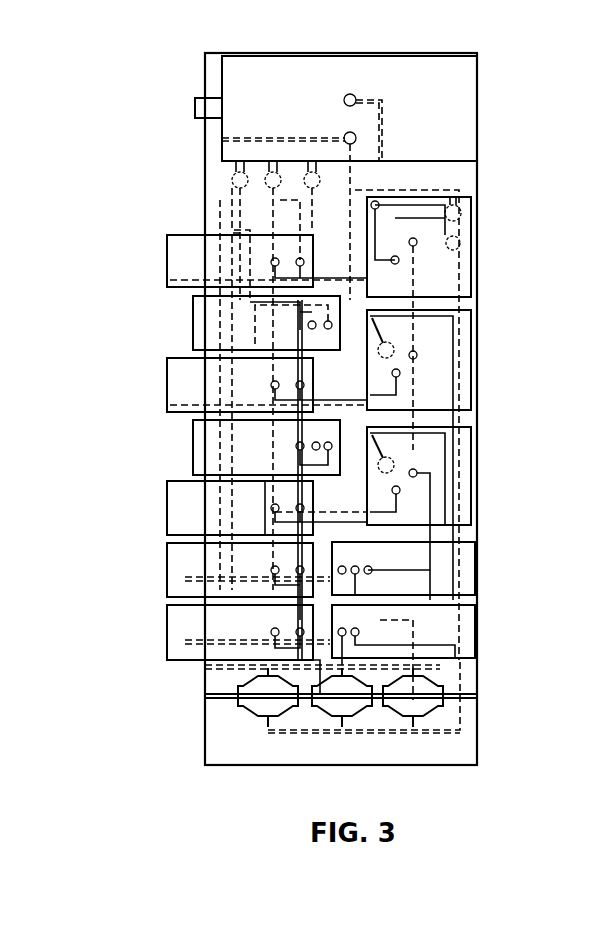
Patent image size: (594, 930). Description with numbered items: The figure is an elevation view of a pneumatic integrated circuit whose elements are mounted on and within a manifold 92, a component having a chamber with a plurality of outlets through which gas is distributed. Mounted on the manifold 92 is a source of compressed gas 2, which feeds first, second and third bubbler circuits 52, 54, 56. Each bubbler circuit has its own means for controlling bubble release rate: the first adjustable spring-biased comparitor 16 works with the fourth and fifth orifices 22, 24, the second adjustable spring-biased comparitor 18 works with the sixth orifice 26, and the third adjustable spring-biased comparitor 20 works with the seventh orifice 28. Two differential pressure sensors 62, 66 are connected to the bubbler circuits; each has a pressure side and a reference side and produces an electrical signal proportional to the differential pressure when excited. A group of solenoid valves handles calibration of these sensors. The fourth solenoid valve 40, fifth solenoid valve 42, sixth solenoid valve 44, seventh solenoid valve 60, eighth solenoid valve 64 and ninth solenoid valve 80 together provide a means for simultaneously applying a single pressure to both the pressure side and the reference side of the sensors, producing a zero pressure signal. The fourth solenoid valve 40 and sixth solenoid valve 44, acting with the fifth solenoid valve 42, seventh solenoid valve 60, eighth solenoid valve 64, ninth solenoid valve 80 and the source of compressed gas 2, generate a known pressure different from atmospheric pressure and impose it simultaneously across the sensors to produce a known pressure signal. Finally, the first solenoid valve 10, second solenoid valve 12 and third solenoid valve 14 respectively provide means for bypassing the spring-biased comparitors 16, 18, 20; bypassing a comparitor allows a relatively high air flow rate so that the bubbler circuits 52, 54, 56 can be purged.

The manifold 92 is at (205, 58).
The source of compressed gas 2 is at (195, 108).
The first solenoid valve 10 is at (167, 255).
The seventh solenoid valve 60 is at (193, 325).
The second solenoid valve 12 is at (167, 378).
The eighth solenoid valve 64 is at (193, 440).
The third solenoid valve 14 is at (167, 498).
The fourth solenoid valve 40 is at (167, 568).
The sixth solenoid valve 44 is at (167, 630).
The first bubbler circuit 52 is at (230, 573).
The second bubbler circuit 54 is at (240, 637).
The third bubbler circuit 56 is at (225, 665).
The first adjustable spring-biased comparitor 16 is at (471, 260).
The fourth orifice 22 is at (460, 205).
The fifth orifice 24 is at (460, 236).
The second adjustable spring-biased comparitor 18 is at (471, 365).
The sixth orifice 26 is at (392, 345).
The third adjustable spring-biased comparitor 20 is at (471, 500).
The seventh orifice 28 is at (392, 460).
The ninth solenoid valve 80 is at (477, 575).
The fifth solenoid valve 42 is at (477, 635).
The differential pressure sensor 62 is at (245, 712).
The differential pressure sensor 66 is at (430, 728).